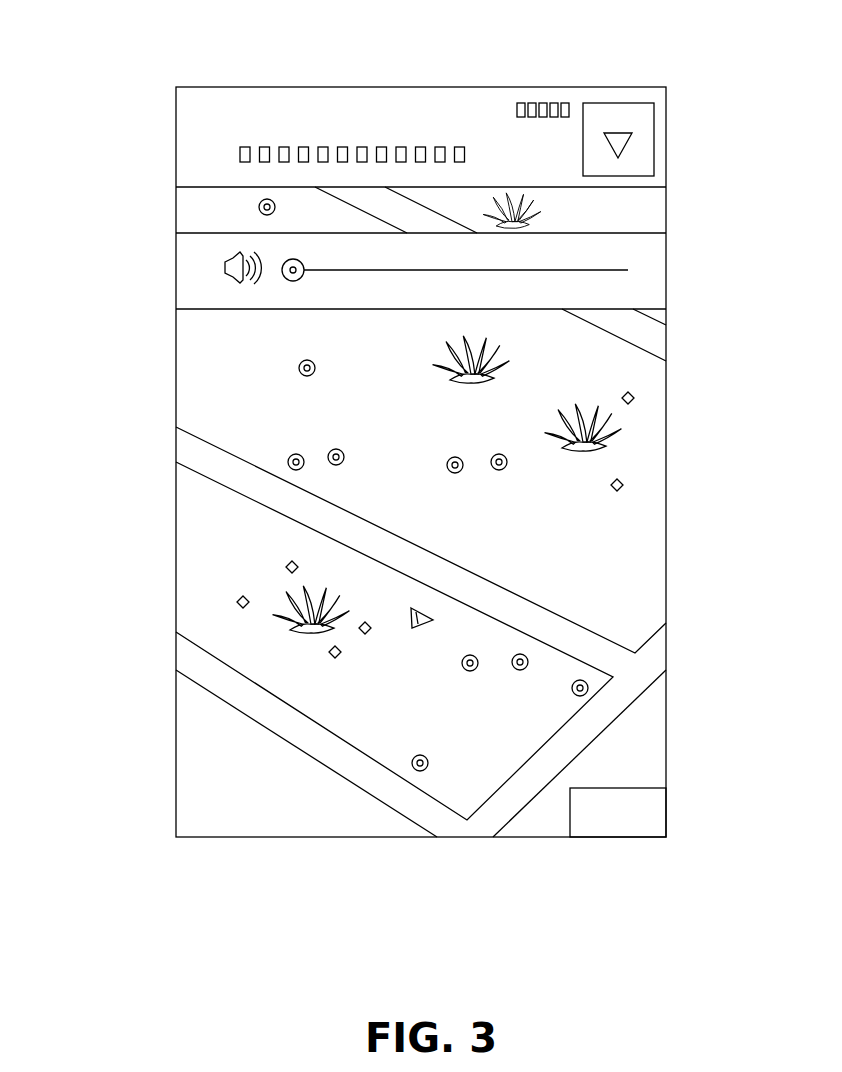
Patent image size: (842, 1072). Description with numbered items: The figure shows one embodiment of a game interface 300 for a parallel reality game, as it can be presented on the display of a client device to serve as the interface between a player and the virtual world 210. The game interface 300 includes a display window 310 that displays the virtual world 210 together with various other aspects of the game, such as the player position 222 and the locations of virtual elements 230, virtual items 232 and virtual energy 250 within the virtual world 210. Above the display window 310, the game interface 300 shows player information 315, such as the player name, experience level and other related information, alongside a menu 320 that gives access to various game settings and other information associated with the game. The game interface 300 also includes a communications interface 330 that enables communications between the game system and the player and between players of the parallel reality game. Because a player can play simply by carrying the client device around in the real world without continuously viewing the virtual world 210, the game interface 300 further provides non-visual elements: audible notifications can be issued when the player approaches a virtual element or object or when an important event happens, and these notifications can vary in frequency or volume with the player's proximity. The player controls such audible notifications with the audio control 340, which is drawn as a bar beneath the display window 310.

The game interface 300 is at (436, 37).
The player information 315 is at (187, 103).
The menu 320 is at (648, 140).
The display window 310 is at (648, 215).
The audio control 340 is at (187, 253).
The virtual world 210 is at (657, 548).
The virtual elements 230 is at (442, 358).
The virtual energy 250 is at (316, 373).
The virtual items 232 is at (283, 565).
The player position 222 is at (411, 618).
The communications interface 330 is at (660, 817).